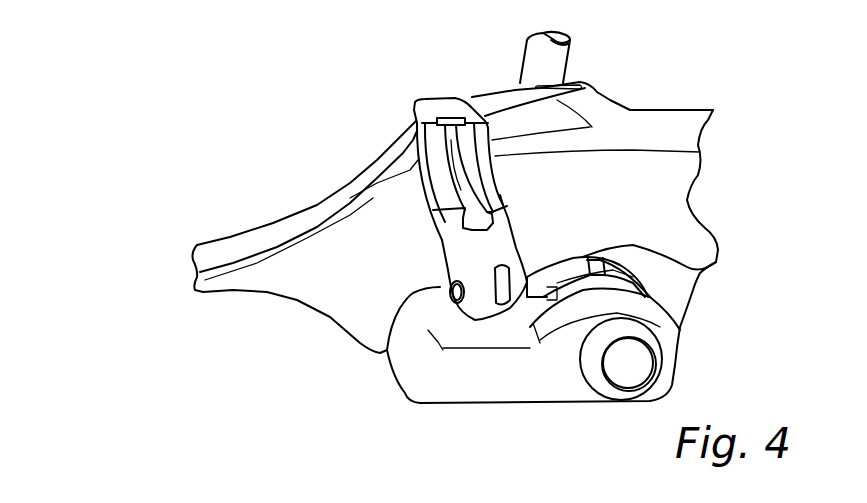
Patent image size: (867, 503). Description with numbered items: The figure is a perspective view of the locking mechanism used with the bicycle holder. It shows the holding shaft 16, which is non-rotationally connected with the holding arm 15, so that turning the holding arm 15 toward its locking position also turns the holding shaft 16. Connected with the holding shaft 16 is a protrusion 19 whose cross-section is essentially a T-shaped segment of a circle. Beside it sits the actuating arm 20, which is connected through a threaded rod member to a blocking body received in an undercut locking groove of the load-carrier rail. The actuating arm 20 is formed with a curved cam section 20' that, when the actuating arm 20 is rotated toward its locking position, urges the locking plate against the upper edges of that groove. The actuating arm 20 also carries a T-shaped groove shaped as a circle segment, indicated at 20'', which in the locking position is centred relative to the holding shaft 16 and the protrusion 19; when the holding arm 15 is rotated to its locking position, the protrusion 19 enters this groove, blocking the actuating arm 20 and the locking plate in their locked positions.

The holding arm 15 is at (550, 62).
The holding shaft 16 is at (637, 360).
The protrusion 19 is at (693, 265).
The actuating arm 20 is at (433, 151).
The clamp tongue 20'' is at (494, 107).
The curved cam section 20' is at (424, 333).